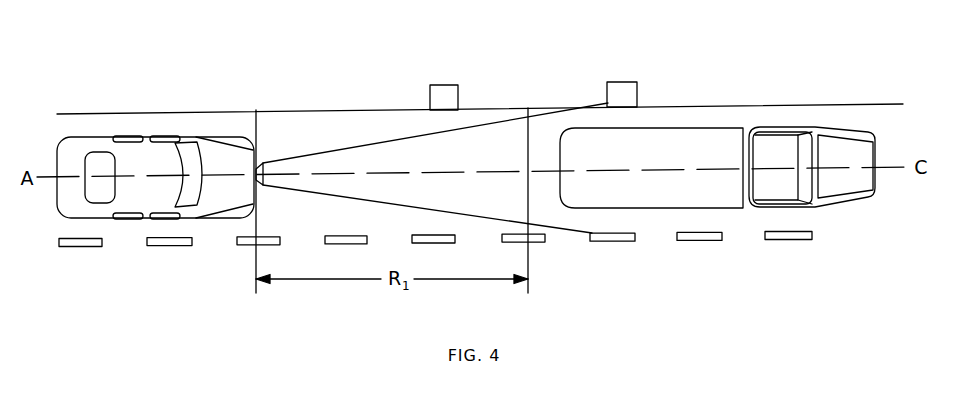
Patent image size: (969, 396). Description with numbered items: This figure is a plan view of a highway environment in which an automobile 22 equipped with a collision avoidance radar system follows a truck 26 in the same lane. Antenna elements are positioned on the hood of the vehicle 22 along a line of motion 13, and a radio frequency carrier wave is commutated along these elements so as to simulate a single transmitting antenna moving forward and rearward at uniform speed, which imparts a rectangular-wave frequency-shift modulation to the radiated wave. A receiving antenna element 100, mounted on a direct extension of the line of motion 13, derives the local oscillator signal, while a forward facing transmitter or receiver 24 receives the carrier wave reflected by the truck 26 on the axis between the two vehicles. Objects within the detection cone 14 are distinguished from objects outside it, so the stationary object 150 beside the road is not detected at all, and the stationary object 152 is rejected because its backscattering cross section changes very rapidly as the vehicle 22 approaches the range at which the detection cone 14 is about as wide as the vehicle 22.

The vehicle 22 is at (198, 137).
The receiving antenna element 100 is at (197, 178).
The forward facing transmitter or receiver 24 is at (265, 177).
The line of motion 13 is at (358, 111).
The detection cone 14 is at (415, 212).
The stationary object 150 is at (442, 84).
The stationary object 152 is at (617, 82).
The truck 26 is at (648, 211).